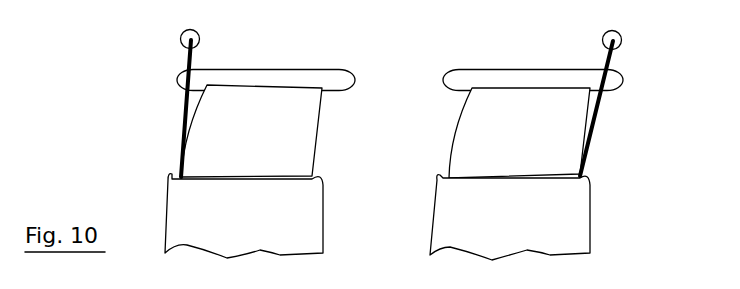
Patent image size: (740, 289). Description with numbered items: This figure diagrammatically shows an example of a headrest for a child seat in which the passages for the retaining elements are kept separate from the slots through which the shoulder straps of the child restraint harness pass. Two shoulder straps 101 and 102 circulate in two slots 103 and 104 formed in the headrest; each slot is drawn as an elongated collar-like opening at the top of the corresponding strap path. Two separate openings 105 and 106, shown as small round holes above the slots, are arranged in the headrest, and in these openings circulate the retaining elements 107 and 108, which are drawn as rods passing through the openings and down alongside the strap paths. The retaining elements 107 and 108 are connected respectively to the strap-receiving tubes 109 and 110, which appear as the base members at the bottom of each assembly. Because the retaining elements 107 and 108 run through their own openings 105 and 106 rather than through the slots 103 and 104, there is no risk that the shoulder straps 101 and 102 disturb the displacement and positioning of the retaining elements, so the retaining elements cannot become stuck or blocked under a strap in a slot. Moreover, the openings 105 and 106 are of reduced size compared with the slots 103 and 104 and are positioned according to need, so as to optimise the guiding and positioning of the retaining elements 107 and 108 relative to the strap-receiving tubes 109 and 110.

The shoulder strap 101 is at (303, 123).
The shoulder strap 102 is at (552, 163).
The slot 103 is at (341, 83).
The slot 104 is at (618, 78).
The opening 105 is at (181, 44).
The opening 106 is at (622, 37).
The retaining element 107 is at (182, 123).
The retaining element 108 is at (598, 125).
The strap-receiving tube 109 is at (303, 232).
The strap-receiving tube 110 is at (580, 225).